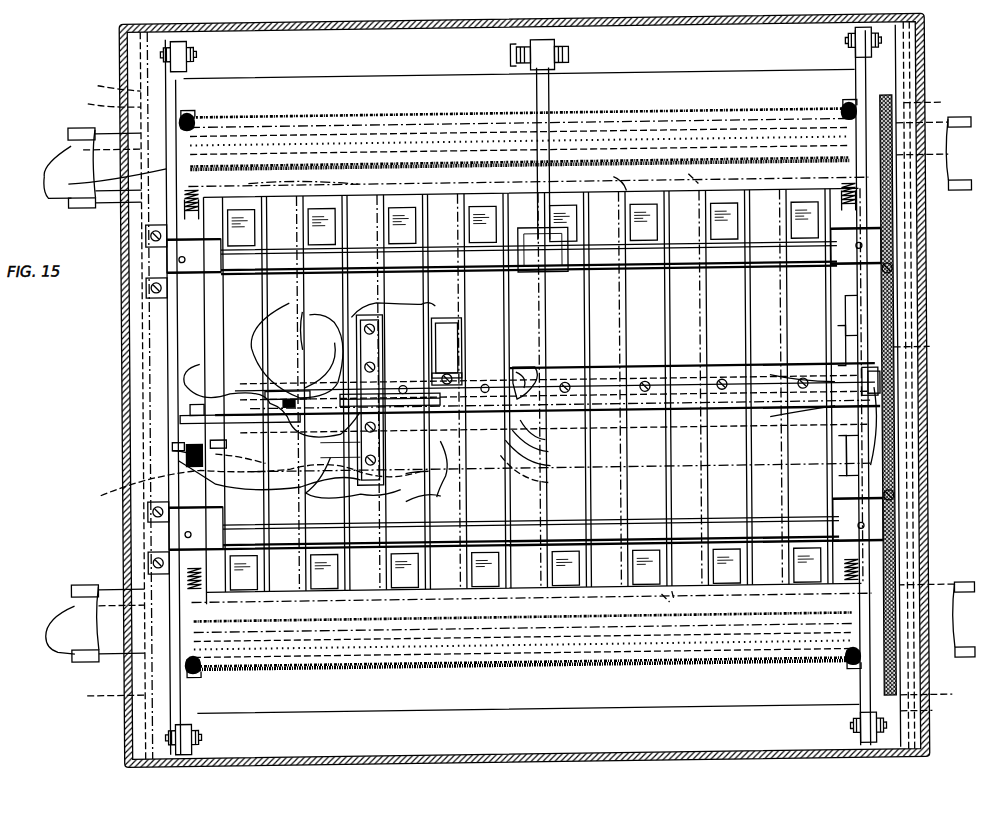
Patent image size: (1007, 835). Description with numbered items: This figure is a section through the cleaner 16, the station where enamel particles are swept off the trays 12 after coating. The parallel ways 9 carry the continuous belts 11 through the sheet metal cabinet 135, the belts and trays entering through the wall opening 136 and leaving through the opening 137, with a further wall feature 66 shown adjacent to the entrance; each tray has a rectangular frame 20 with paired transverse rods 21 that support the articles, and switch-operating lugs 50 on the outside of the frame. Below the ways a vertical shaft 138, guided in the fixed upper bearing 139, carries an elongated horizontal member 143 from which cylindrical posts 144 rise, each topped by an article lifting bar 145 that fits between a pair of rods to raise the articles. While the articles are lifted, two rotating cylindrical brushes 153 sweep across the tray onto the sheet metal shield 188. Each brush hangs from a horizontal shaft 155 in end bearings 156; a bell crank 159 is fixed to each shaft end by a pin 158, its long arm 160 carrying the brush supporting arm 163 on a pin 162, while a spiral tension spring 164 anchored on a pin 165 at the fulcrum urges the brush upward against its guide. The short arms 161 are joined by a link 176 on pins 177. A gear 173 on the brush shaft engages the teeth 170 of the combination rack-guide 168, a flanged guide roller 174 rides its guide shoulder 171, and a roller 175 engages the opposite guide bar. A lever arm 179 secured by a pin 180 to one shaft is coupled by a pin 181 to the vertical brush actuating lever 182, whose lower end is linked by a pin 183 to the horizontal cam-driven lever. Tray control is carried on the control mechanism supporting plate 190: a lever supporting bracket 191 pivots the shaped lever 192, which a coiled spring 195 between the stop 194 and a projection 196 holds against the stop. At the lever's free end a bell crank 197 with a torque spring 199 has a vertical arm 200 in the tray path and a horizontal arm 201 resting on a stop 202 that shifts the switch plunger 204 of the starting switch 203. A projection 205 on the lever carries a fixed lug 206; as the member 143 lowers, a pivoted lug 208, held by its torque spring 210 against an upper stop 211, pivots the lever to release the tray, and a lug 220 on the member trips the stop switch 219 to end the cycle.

The ways 9 is at (56, 400).
The continuous belt 11 is at (72, 120).
The tray 12 is at (680, 173).
The cleaner 16 is at (118, 517).
The rectangular frame 20 is at (608, 177).
The transverse cylindrical rods 21 is at (672, 601).
The switch-operating lugs 50 is at (330, 180).
The wall 66 is at (108, 82).
The enclosing cabinet 135 is at (895, 452).
The opening 136 is at (939, 100).
The wall opening 137 is at (102, 99).
The vertical shaft 138 is at (530, 412).
The fixed upper bearing 139 is at (545, 440).
The elongated horizontal member 143 is at (282, 386).
The cylindrical posts 144 is at (720, 380).
The article lifting bar 145 is at (240, 224).
The rotating cylindrical brushes 153 is at (372, 112).
The rotatable horizontal shaft 155 is at (358, 246).
The end bearings 156 is at (147, 285).
The pin 158 is at (140, 246).
The bell crank 159 is at (880, 384).
The long arm 160 is at (939, 580).
The short arm 161 is at (894, 325).
The pin 162 is at (199, 55).
The brush supporting arm 163 is at (199, 118).
The spiral tension spring 164 is at (203, 200).
The pin 165 is at (203, 212).
The combination rack-guide 168 is at (933, 708).
The teeth 170 is at (930, 348).
The guide shoulder 171 is at (936, 160).
The gear 173 is at (898, 112).
The flanged guide roller 174 is at (898, 146).
The roller 175 is at (102, 424).
The link 176 is at (835, 418).
The pins 177 is at (790, 378).
The lever arm 179 is at (552, 100).
The pin 180 is at (542, 240).
The pin 181 is at (571, 58).
The vertical brush actuating lever 182 is at (519, 46).
The pin 183 is at (550, 483).
The sheet metal shield 188 is at (200, 360).
The control mechanism supporting plate 190 is at (425, 310).
The lever supporting bracket 191 is at (550, 466).
The shaped lever 192 is at (441, 469).
The stop 194 is at (430, 471).
The coiled spring 195 is at (433, 500).
The projection 196 is at (548, 452).
The bell crank 197 is at (174, 452).
The torque spring 199 is at (178, 456).
The vertical arm 200 is at (172, 440).
The horizontal arm 201 is at (250, 482).
The stop 202 is at (240, 420).
The starting switch 203 is at (226, 440).
The switch plunger 204 is at (257, 462).
The projection 205 is at (352, 478).
The fixed lug 206 is at (372, 300).
The pivoted lug 208 is at (297, 350).
The torque spring 210 is at (305, 345).
The upper stop 211 is at (303, 309).
The stop switch 219 is at (447, 372).
The lug 220 is at (513, 367).